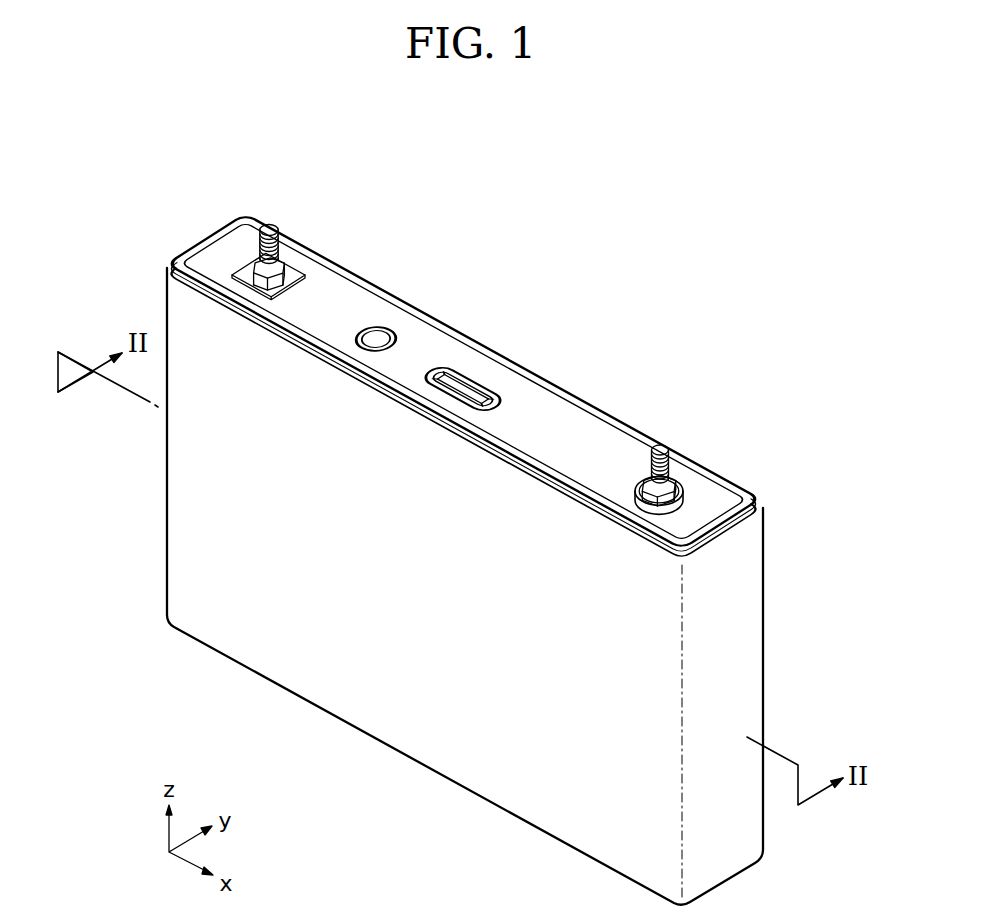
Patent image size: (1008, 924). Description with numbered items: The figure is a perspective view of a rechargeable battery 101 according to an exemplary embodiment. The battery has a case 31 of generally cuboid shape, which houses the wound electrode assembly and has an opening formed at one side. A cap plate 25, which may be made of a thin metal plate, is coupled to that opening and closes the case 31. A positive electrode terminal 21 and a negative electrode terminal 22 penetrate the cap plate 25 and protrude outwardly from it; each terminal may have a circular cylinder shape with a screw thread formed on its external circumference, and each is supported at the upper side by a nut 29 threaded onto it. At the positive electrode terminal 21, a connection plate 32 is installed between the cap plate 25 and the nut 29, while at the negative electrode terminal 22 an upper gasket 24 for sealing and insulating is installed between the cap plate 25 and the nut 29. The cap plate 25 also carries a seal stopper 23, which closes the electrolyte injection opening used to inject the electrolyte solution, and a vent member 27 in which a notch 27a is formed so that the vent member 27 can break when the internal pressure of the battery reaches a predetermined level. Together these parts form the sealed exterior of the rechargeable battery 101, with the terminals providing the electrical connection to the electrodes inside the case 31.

The rechargeable battery 101 is at (604, 320).
The positive electrode terminal 21 is at (268, 227).
The negative electrode terminal 22 is at (660, 449).
The seal stopper 23 is at (377, 333).
The upper gasket 24 is at (685, 498).
The cap plate 25 is at (328, 290).
The vent member 27 is at (457, 377).
The notch 27a is at (472, 392).
The nut 29 is at (677, 497).
The case 31 is at (398, 725).
The connection plate 32 is at (243, 272).